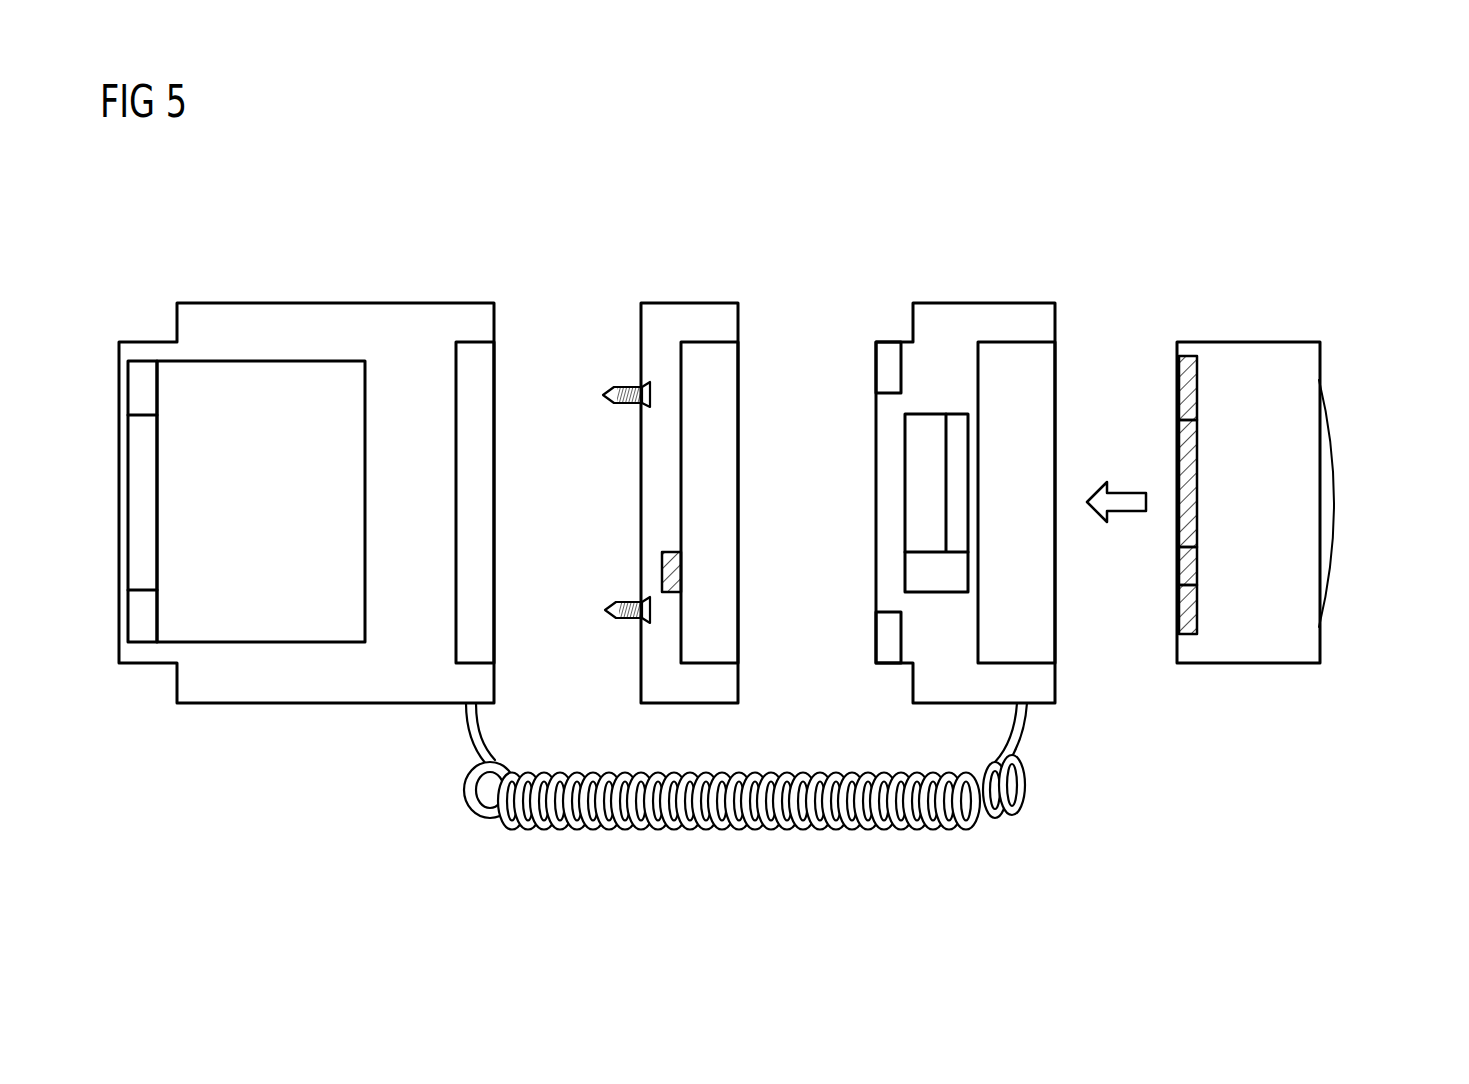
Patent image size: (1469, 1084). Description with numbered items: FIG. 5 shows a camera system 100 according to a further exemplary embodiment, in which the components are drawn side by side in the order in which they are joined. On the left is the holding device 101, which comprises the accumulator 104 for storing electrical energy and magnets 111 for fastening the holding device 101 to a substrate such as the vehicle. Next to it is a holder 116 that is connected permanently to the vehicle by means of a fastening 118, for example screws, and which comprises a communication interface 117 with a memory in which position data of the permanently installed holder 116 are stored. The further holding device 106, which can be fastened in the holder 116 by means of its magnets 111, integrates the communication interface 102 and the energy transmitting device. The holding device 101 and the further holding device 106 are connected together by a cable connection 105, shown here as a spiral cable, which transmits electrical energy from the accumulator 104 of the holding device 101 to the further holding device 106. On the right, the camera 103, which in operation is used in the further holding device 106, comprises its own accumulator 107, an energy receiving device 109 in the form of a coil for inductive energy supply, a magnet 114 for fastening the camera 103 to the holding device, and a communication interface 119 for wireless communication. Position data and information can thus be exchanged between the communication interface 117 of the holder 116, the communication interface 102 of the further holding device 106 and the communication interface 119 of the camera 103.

The camera system 100 is at (1188, 203).
The holding device 101 is at (307, 333).
The communication interface 102 is at (937, 573).
The camera 103 is at (1253, 372).
The accumulator 104 is at (272, 593).
The cable connection 105 is at (762, 828).
The further holding device 106 is at (953, 332).
The accumulator 107 is at (1320, 483).
The energy receiving device 109 is at (1187, 488).
The magnet 111 is at (143, 382).
The magnet 114 is at (1187, 395).
The holder 116 is at (691, 323).
The communication interface 117 is at (662, 572).
The fastening 118 is at (608, 617).
The communication interface 119 is at (1187, 567).